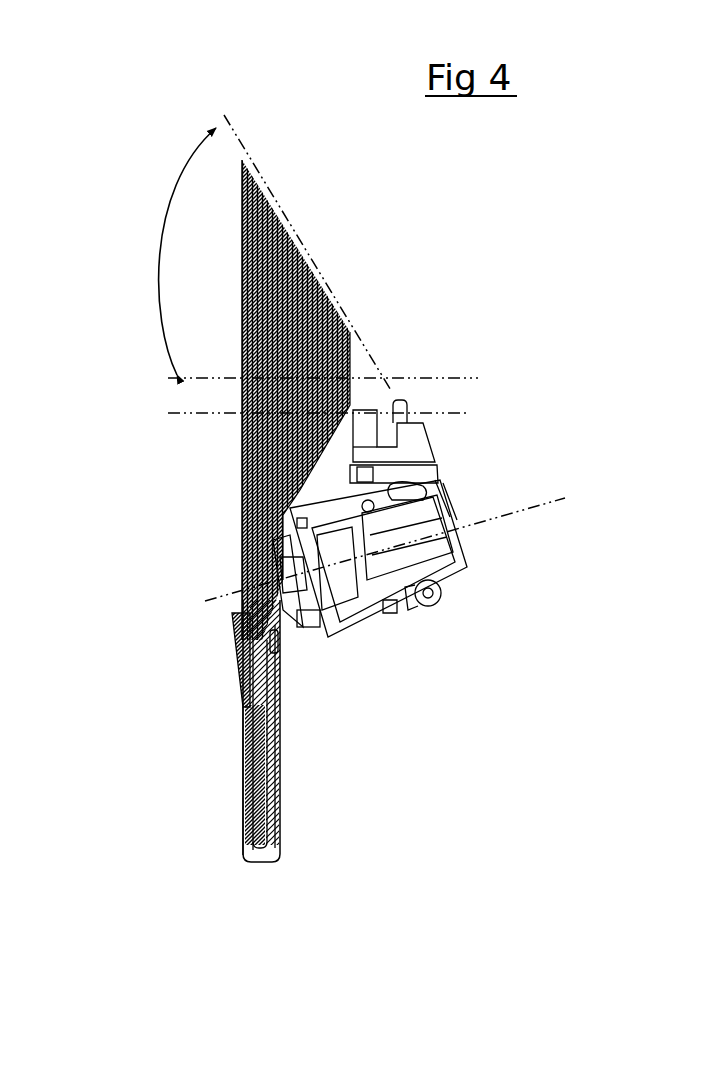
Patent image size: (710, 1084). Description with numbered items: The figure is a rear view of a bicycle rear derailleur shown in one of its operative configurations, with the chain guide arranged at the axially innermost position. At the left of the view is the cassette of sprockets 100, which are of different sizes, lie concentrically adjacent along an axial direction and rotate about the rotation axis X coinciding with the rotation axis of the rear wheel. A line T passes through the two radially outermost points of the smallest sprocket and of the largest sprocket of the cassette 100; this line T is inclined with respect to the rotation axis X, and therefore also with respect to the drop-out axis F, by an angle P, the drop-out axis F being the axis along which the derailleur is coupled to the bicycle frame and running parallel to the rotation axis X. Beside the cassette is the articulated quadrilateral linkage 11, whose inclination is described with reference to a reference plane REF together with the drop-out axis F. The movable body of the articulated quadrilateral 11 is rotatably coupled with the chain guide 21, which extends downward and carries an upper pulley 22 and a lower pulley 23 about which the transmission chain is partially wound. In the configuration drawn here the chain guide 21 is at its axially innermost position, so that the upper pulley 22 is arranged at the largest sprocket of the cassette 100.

The articulated quadrilateral linkage 11 is at (373, 637).
The chain guide 21 is at (267, 867).
The upper pulley 22 is at (223, 653).
The lower pulley 23 is at (247, 780).
The sprockets 100 is at (247, 507).
The line T is at (290, 228).
The rotation axis X is at (432, 378).
The drop-out axis F is at (183, 413).
The angle P is at (177, 251).
The reference plane REF is at (505, 513).